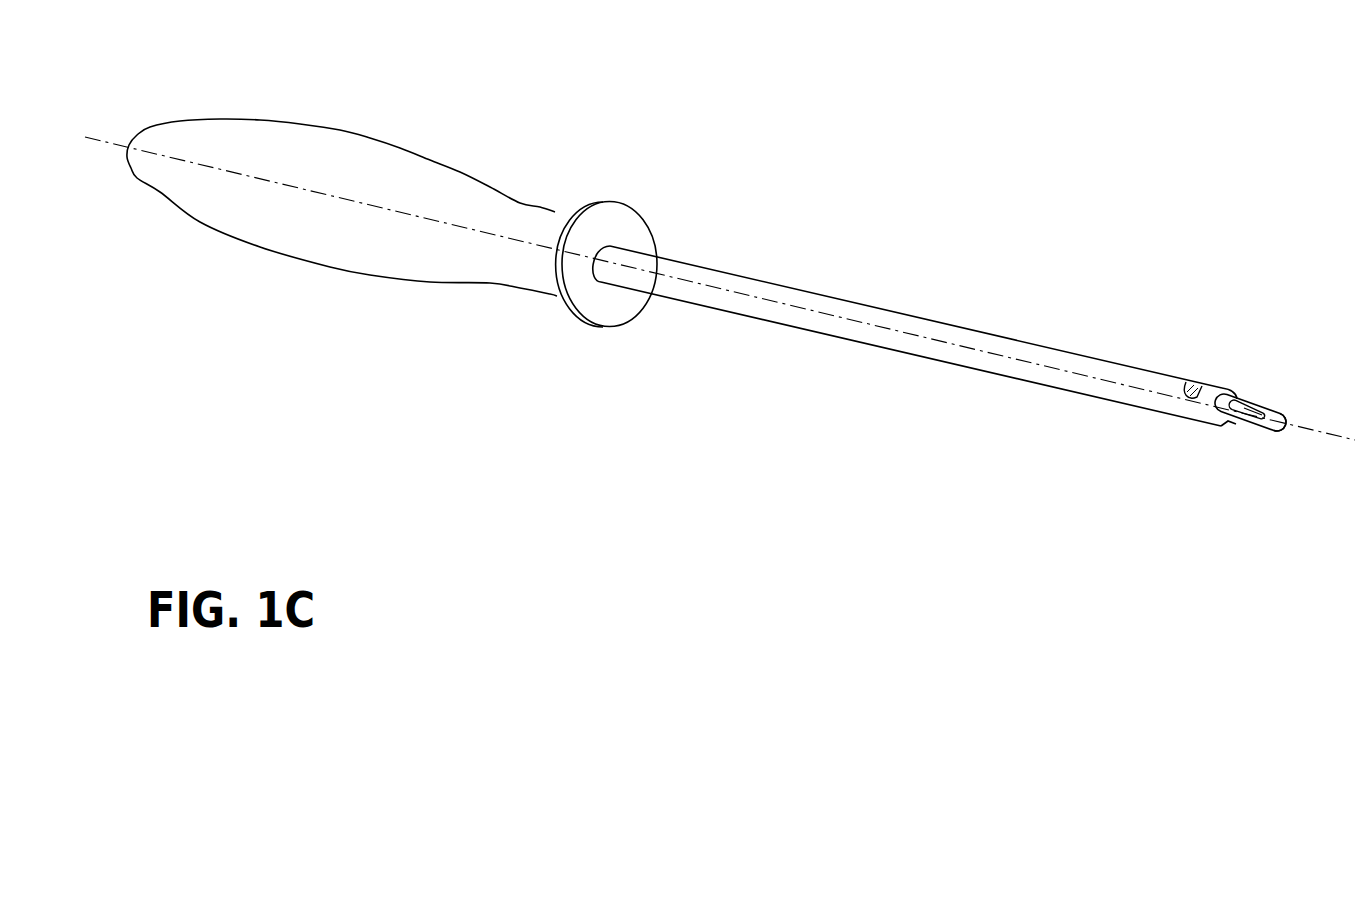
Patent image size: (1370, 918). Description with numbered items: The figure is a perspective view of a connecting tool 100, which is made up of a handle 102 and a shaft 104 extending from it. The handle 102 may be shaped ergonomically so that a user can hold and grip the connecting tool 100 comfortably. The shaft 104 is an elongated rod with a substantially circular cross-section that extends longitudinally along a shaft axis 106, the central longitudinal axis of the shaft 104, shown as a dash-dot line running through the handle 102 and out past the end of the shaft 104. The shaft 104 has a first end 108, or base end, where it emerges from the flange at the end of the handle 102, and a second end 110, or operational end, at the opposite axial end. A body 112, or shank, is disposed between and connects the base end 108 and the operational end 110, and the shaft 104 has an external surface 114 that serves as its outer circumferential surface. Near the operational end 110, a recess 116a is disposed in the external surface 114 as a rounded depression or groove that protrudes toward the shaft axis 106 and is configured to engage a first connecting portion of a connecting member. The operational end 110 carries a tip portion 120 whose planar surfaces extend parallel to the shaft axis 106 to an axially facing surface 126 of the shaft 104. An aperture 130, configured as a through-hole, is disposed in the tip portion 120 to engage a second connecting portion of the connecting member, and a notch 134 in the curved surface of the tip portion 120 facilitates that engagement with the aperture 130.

The connecting tool 100 is at (1271, 282).
The handle 102 is at (242, 120).
The shaft 104 is at (816, 276).
The shaft axis 106 is at (388, 207).
The first end 108 is at (627, 239).
The second end 110 is at (1171, 366).
The body 112 is at (893, 326).
The external surface 114 is at (1003, 346).
The recess 116a is at (1190, 380).
The tip portion 120 is at (1233, 447).
The axially facing surface 126 is at (1273, 425).
The aperture 130 is at (1238, 408).
The notch 134 is at (1257, 413).